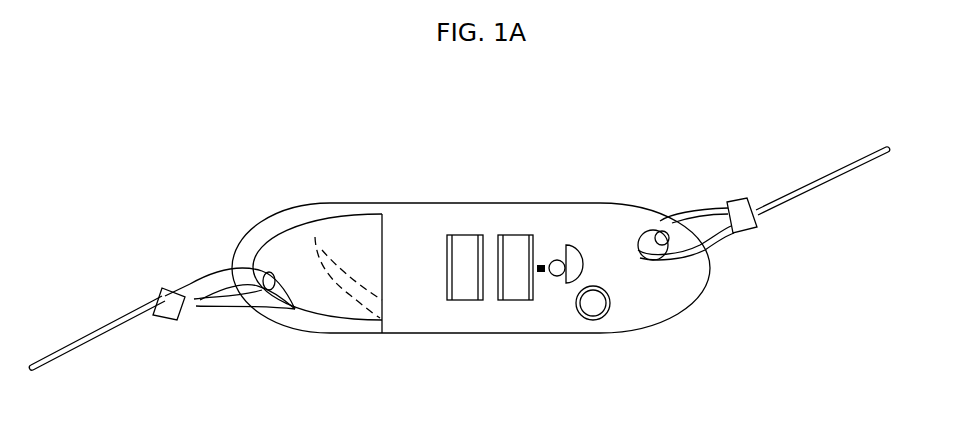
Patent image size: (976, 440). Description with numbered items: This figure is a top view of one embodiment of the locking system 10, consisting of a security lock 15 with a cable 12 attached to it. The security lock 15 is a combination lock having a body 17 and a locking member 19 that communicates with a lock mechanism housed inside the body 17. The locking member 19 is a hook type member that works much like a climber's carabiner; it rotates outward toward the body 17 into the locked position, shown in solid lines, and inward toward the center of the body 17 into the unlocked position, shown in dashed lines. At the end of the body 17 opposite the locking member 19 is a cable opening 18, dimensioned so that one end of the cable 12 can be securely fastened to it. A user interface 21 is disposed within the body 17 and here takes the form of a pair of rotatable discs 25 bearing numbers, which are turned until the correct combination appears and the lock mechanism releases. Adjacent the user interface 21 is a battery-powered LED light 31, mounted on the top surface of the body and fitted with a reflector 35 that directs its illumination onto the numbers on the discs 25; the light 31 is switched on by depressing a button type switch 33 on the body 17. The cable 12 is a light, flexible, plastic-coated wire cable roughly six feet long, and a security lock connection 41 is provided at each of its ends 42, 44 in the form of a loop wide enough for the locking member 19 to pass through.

The locking system 10 is at (575, 96).
The cable 12 is at (118, 329).
The security lock 15 is at (412, 205).
The body 17 is at (513, 315).
The cable opening 18 is at (664, 236).
The locking member 19 is at (327, 325).
The user interface 21 is at (478, 300).
The rotatable discs 25 is at (455, 300).
The light 31 is at (557, 258).
The button type switch 33 is at (602, 316).
The reflector 35 is at (578, 263).
The security lock connection 41 is at (241, 312).
The end of cable 42 is at (719, 243).
The end of cable 44 is at (207, 282).